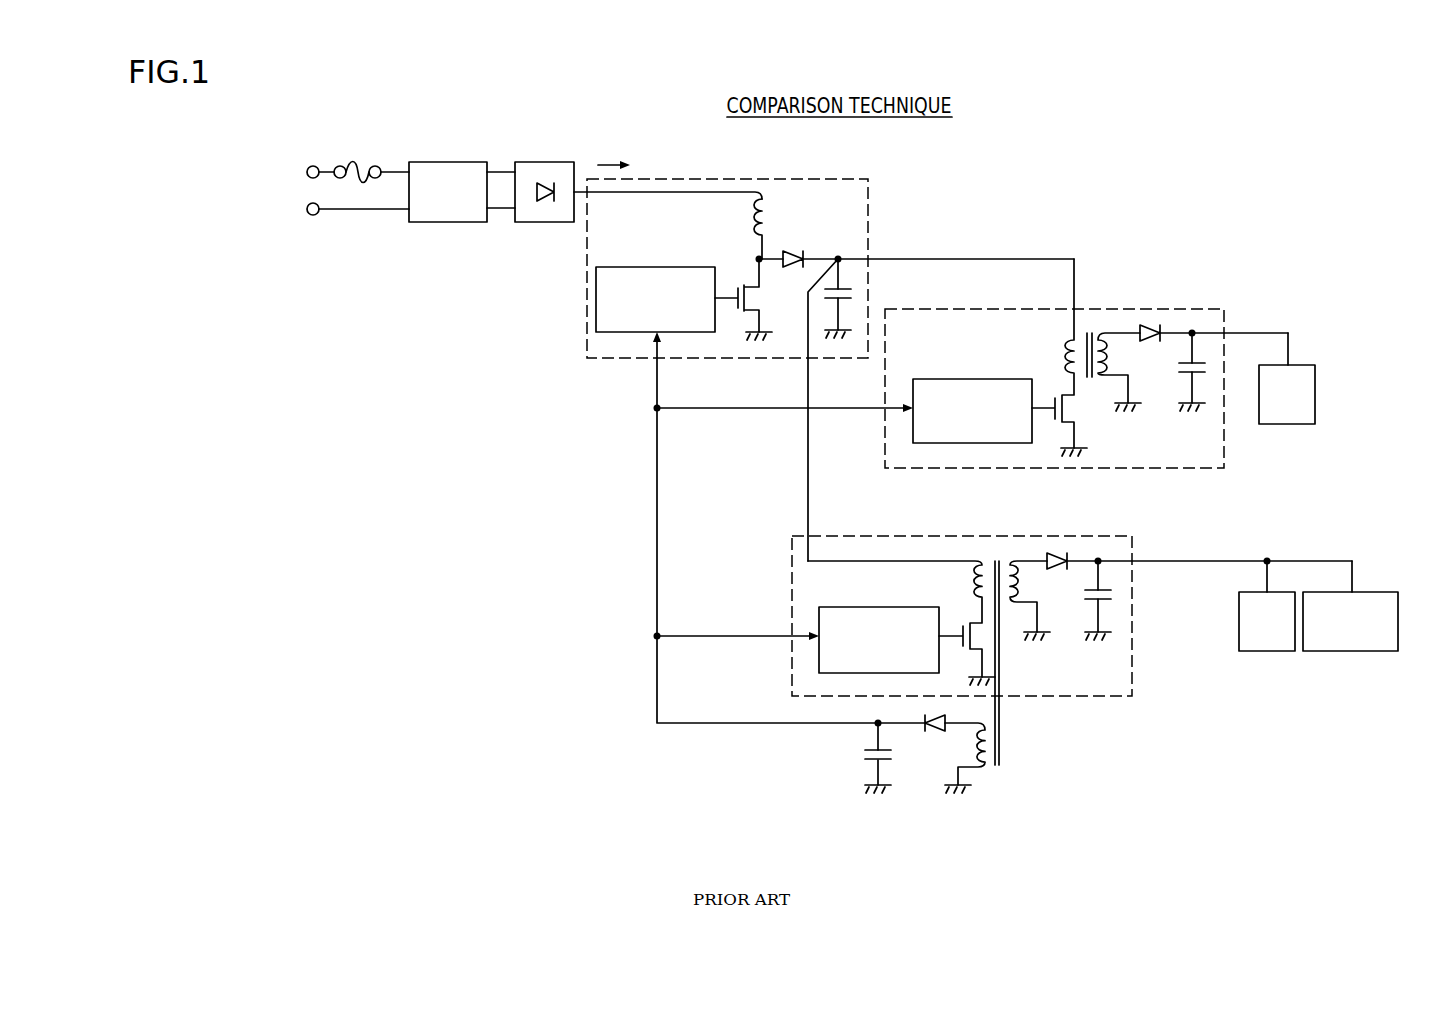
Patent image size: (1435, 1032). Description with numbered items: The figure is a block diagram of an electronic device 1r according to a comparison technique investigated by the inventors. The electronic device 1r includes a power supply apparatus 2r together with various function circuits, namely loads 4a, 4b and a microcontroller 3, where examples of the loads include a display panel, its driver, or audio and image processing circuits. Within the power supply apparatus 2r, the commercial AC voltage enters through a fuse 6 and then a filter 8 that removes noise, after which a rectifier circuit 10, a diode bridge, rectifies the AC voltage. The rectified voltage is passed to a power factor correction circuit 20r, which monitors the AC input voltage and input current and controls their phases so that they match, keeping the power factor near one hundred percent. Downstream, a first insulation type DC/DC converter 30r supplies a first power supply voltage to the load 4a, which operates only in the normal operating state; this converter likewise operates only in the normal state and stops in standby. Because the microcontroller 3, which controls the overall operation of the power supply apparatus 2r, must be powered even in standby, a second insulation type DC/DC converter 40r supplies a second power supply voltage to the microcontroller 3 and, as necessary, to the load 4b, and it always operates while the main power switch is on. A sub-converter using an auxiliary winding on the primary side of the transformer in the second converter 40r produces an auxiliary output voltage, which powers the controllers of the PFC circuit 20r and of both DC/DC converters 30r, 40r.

The electronic device 1r is at (820, 867).
The power supply apparatus 2r is at (298, 792).
The microcontroller 3 is at (1358, 651).
The load 4a is at (1290, 424).
The load 4b is at (1272, 651).
The fuse 6 is at (356, 162).
The filter 8 is at (452, 162).
The rectifier circuit 10 is at (538, 162).
The power factor correction circuit 20r is at (818, 179).
The first insulation type DC/DC converter 30r is at (1125, 309).
The second insulation type DC/DC converter 40r is at (1033, 536).